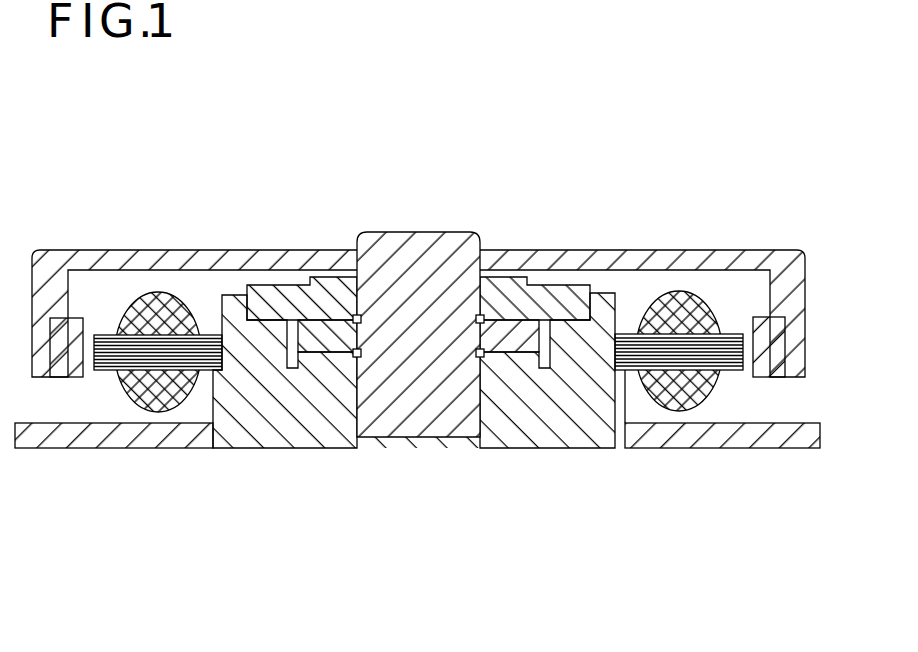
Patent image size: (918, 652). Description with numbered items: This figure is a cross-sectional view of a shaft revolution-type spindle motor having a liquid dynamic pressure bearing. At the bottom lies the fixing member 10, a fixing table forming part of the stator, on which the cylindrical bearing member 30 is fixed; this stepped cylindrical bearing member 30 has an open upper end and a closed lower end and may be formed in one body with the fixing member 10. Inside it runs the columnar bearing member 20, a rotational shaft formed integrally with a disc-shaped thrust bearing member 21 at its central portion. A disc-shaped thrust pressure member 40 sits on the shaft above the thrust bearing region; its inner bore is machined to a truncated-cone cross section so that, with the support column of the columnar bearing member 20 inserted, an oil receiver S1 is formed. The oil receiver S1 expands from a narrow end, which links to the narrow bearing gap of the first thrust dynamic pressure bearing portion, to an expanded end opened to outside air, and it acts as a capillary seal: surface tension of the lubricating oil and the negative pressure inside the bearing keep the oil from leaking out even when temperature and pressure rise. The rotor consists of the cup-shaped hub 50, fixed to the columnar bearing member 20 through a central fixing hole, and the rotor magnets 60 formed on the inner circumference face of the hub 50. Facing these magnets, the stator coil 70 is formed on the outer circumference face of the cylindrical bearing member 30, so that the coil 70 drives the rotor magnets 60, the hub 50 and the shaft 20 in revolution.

The fixing member 10 is at (60, 437).
The columnar bearing member 20 is at (422, 240).
The disc-shaped thrust bearing member 21 is at (320, 355).
The cylindrical bearing member 30 is at (567, 424).
The disc-shaped thrust pressure member 40 is at (567, 285).
The cup-shaped hub 50 is at (153, 253).
The rotor magnets 60 is at (763, 337).
The stator coil 70 is at (678, 304).
The oil receiver S1 is at (350, 294).